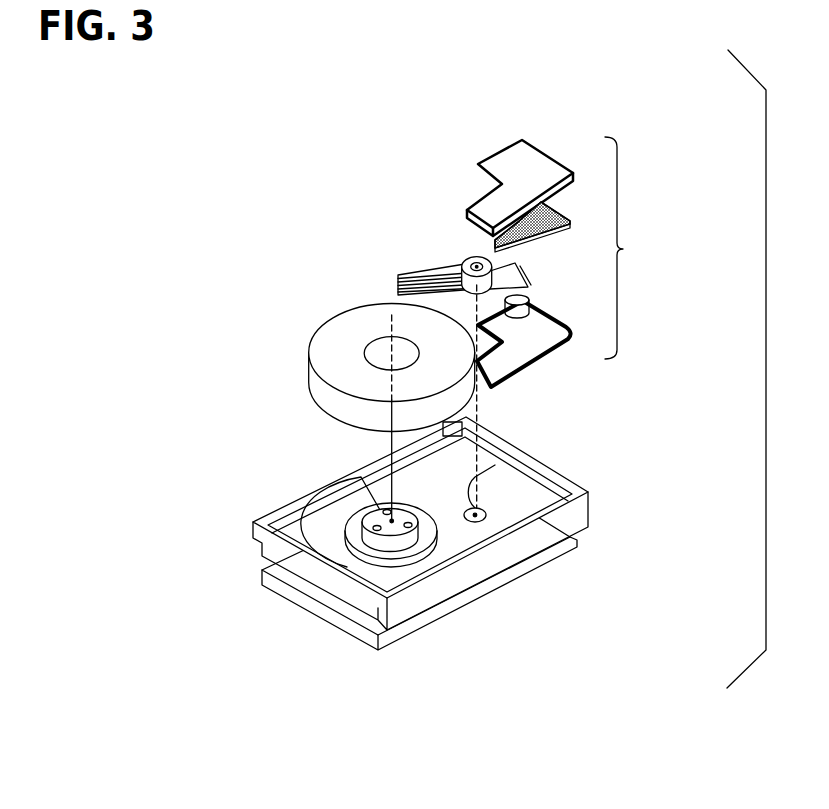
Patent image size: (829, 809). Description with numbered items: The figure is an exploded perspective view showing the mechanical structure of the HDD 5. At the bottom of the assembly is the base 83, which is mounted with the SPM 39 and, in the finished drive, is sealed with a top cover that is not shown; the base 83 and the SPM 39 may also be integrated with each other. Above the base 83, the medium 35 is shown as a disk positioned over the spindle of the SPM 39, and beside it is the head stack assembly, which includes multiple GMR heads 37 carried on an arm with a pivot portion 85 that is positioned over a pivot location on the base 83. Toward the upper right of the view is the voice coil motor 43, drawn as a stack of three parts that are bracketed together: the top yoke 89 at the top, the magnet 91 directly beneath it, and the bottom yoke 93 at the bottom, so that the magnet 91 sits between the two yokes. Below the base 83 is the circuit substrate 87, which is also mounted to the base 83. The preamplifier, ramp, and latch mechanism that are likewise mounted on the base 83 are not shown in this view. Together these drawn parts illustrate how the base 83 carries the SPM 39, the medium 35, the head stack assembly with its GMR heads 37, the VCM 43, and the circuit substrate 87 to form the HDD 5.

The HDD 5 is at (619, 93).
The medium 35 is at (312, 388).
The GMR heads 37 is at (396, 287).
The SPM 39 is at (477, 522).
The voice coil motor 43 is at (633, 248).
The base 83 is at (290, 503).
The actuator pivot assembly 85 is at (461, 264).
The circuit substrate 87 is at (425, 632).
The top yoke 89 is at (518, 157).
The magnet 91 is at (490, 247).
The bottom yoke 93 is at (531, 367).